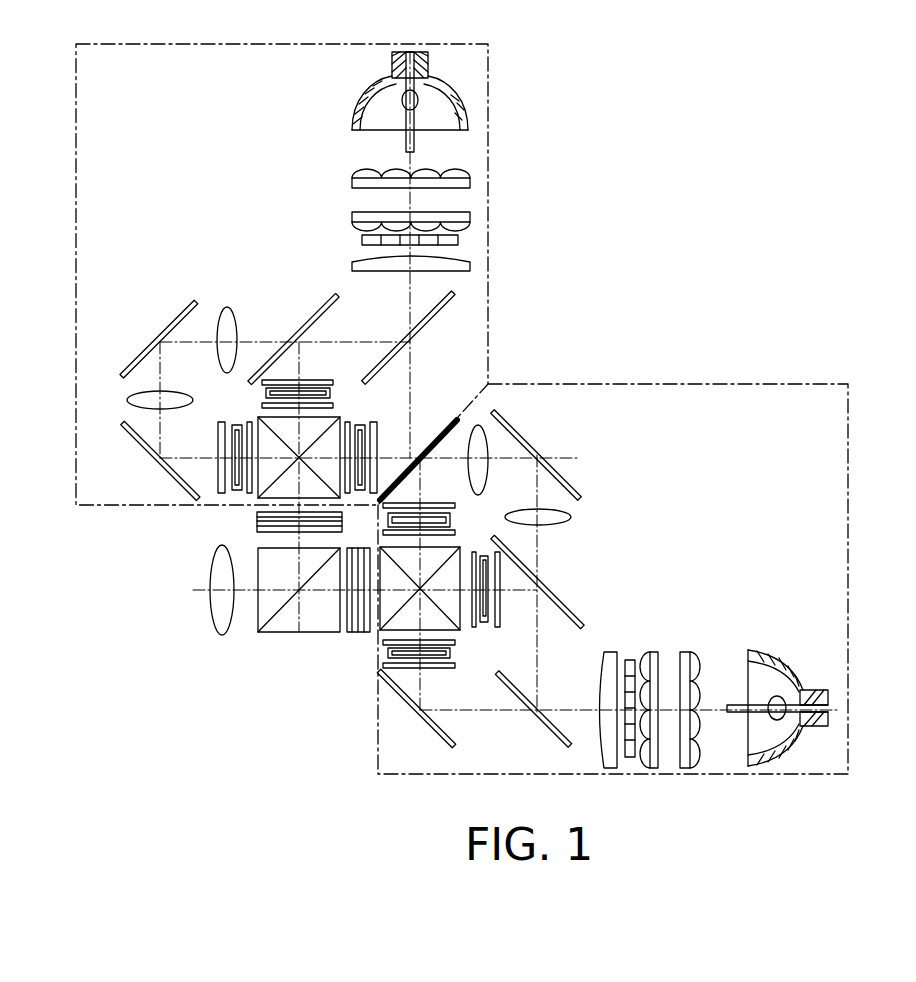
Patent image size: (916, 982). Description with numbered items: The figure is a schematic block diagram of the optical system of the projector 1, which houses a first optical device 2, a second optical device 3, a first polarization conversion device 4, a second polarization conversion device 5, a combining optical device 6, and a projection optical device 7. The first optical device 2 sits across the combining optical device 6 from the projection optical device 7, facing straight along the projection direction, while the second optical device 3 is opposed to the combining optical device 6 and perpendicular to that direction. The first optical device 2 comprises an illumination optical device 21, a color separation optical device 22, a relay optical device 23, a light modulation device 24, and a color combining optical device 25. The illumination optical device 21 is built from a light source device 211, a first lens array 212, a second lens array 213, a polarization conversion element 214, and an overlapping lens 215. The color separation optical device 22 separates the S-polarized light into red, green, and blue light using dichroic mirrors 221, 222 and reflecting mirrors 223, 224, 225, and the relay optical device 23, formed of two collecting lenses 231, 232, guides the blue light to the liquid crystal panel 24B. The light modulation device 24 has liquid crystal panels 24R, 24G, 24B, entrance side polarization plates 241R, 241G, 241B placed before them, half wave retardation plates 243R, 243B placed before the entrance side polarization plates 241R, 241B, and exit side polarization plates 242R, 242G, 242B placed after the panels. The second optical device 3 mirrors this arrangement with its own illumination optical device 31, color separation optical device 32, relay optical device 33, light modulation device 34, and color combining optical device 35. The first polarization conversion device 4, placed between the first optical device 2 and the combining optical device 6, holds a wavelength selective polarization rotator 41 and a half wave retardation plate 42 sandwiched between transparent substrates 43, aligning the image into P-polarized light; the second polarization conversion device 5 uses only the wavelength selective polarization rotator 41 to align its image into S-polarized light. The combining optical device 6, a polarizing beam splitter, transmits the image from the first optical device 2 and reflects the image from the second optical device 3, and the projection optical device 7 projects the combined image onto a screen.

The projector 1 is at (642, 259).
The first optical device 2 is at (848, 437).
The second optical device 3 is at (488, 85).
The first polarization conversion device 4 is at (343, 639).
The second polarization conversion device 5 is at (259, 599).
The combining optical device 6 is at (268, 634).
The projection optical device 7 is at (207, 631).
The illumination optical device 21 is at (714, 634).
The color separation optical device 22 is at (530, 578).
The relay optical device 23 is at (560, 460).
The light modulation device 24 is at (442, 605).
The color combining optical device 25 is at (393, 553).
The illumination optical device 31 is at (326, 181).
The color separation optical device 32 is at (298, 299).
The relay optical device 33 is at (226, 304).
The light modulation device 34 is at (348, 409).
The color combining optical device 35 is at (284, 424).
The wavelength selective polarization rotator 41 is at (270, 518).
The half wave retardation plate 42 is at (352, 639).
The transparent substrates 43 is at (284, 531).
The light source device 211 is at (770, 657).
The first lens array 212 is at (688, 652).
The second lens array 213 is at (655, 652).
The polarization conversion element 214 is at (631, 660).
The overlapping lens 215 is at (608, 652).
The dichroic mirror 221 is at (550, 731).
The dichroic mirror 222 is at (568, 610).
The reflecting mirror 223 is at (441, 742).
The reflecting mirror 224 is at (553, 462).
The reflecting mirror 225 is at (428, 441).
The collecting lens 231 is at (572, 519).
The collecting lens 232 is at (473, 426).
The liquid crystal panel 24B is at (492, 510).
The liquid crystal panel 24G is at (530, 611).
The liquid crystal panel 24R is at (398, 692).
The entrance side polarization plate 241B is at (455, 515).
The entrance side polarization plate 241G is at (500, 608).
The entrance side polarization plate 241R is at (440, 668).
The exit side polarization plate 242B is at (455, 532).
The exit side polarization plate 242G is at (475, 626).
The exit side polarization plate 242R is at (383, 668).
The half wave retardation plate 243B is at (430, 502).
The half wave retardation plate 243R is at (440, 660).